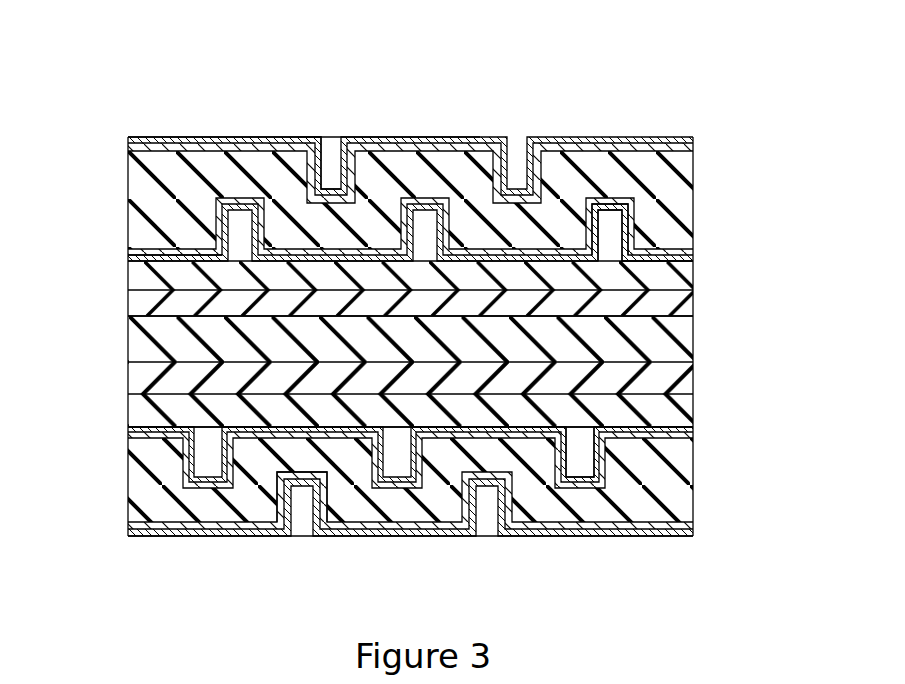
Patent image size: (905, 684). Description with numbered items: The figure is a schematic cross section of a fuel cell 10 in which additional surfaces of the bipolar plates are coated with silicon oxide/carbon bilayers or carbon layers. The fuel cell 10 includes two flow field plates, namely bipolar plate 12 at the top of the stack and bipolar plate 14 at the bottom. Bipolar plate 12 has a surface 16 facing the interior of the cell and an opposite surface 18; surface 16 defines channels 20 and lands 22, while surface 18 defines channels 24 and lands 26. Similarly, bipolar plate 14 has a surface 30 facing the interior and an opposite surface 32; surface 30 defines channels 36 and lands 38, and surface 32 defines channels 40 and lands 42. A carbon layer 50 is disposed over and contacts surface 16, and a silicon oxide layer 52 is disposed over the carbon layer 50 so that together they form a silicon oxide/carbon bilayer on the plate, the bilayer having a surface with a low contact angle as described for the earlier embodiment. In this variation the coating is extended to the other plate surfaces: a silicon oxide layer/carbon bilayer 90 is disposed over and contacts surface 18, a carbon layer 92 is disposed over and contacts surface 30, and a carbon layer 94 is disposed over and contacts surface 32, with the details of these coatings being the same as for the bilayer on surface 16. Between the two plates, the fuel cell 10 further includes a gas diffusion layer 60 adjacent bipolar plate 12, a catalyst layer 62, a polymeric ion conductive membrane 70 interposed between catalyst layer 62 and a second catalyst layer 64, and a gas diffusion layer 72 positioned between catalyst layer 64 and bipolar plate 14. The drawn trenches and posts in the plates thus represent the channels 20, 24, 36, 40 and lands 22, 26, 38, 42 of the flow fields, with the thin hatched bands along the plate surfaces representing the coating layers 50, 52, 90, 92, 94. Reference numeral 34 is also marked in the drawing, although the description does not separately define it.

The fuel cell 10 is at (632, 97).
The bipolar plate 12 is at (114, 156).
The bipolar plate 14 is at (140, 545).
The surface 16 is at (250, 200).
The surface 18 is at (108, 217).
The channels 20 is at (238, 232).
The lands 22 is at (337, 245).
The channels 24 is at (320, 172).
The lands 26 is at (387, 142).
The surface 30 is at (150, 425).
The surface 32 is at (155, 518).
The trench of second substrate 34 is at (580, 455).
The channels 36 is at (200, 448).
The lands 38 is at (353, 437).
The channels 40 is at (302, 503).
The lands 42 is at (213, 533).
The carbon layer 50 is at (128, 249).
The silicon oxide layer 52 is at (612, 230).
The gas diffusion layer 60 is at (128, 275).
The catalyst layer 62 is at (693, 303).
The catalyst layer 64 is at (128, 372).
The polymeric ion conductive membrane 70 is at (693, 333).
The gas diffusion layer 72 is at (693, 407).
The silicon oxide layer/carbon bilayer 90 is at (168, 138).
The carbon layer 92 is at (698, 430).
The carbon layer 94 is at (698, 532).